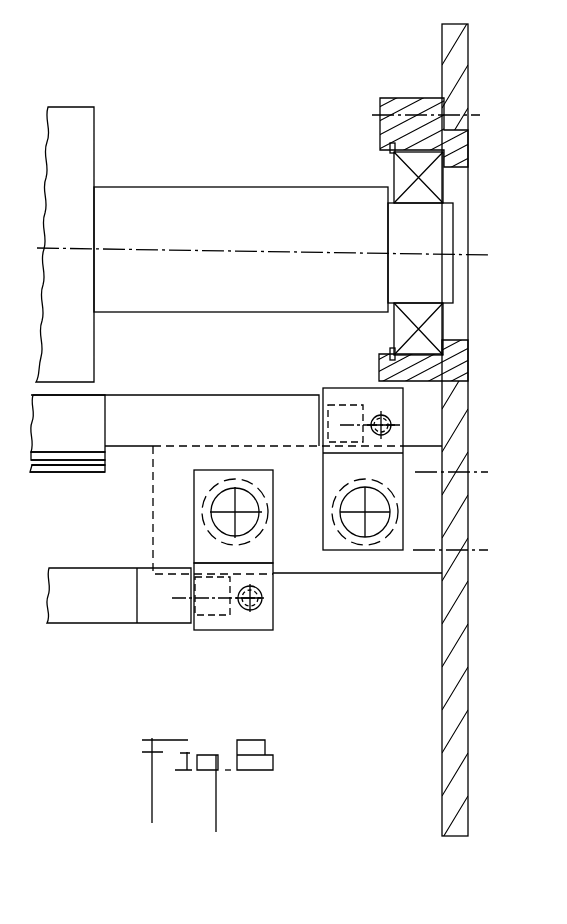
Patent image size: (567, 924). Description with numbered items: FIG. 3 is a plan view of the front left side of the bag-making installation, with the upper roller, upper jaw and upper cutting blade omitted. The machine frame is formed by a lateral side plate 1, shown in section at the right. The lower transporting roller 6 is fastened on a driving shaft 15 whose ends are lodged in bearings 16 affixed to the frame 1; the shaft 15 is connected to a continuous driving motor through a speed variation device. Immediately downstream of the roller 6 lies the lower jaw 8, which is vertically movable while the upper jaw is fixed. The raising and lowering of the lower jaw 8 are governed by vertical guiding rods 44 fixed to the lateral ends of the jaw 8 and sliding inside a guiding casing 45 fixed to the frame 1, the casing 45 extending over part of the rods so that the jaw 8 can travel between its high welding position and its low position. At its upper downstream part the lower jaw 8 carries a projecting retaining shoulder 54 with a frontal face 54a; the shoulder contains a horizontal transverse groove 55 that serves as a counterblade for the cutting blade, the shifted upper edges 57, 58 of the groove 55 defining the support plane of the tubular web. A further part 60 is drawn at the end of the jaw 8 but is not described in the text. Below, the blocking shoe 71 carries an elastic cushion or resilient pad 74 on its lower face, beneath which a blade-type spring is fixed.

The lateral side plate 1 is at (467, 447).
The lower transporting roller 6 is at (94, 146).
The lower jaw 8 is at (93, 400).
The driving shaft 15 is at (262, 188).
The bearings 16 is at (466, 153).
The vertical guiding rods 44 is at (368, 536).
The guiding casing 45 is at (312, 578).
The retaining shoulder 54 is at (78, 445).
The frontal face of retaining shoulder 54a is at (52, 472).
The transverse groove 55 is at (100, 460).
The strip 57 is at (88, 471).
The shifted upper edge of transverse groove 58 is at (92, 450).
The block 60 is at (63, 400).
The blocking shoe 71 is at (113, 617).
The resilient pad 74 is at (247, 500).